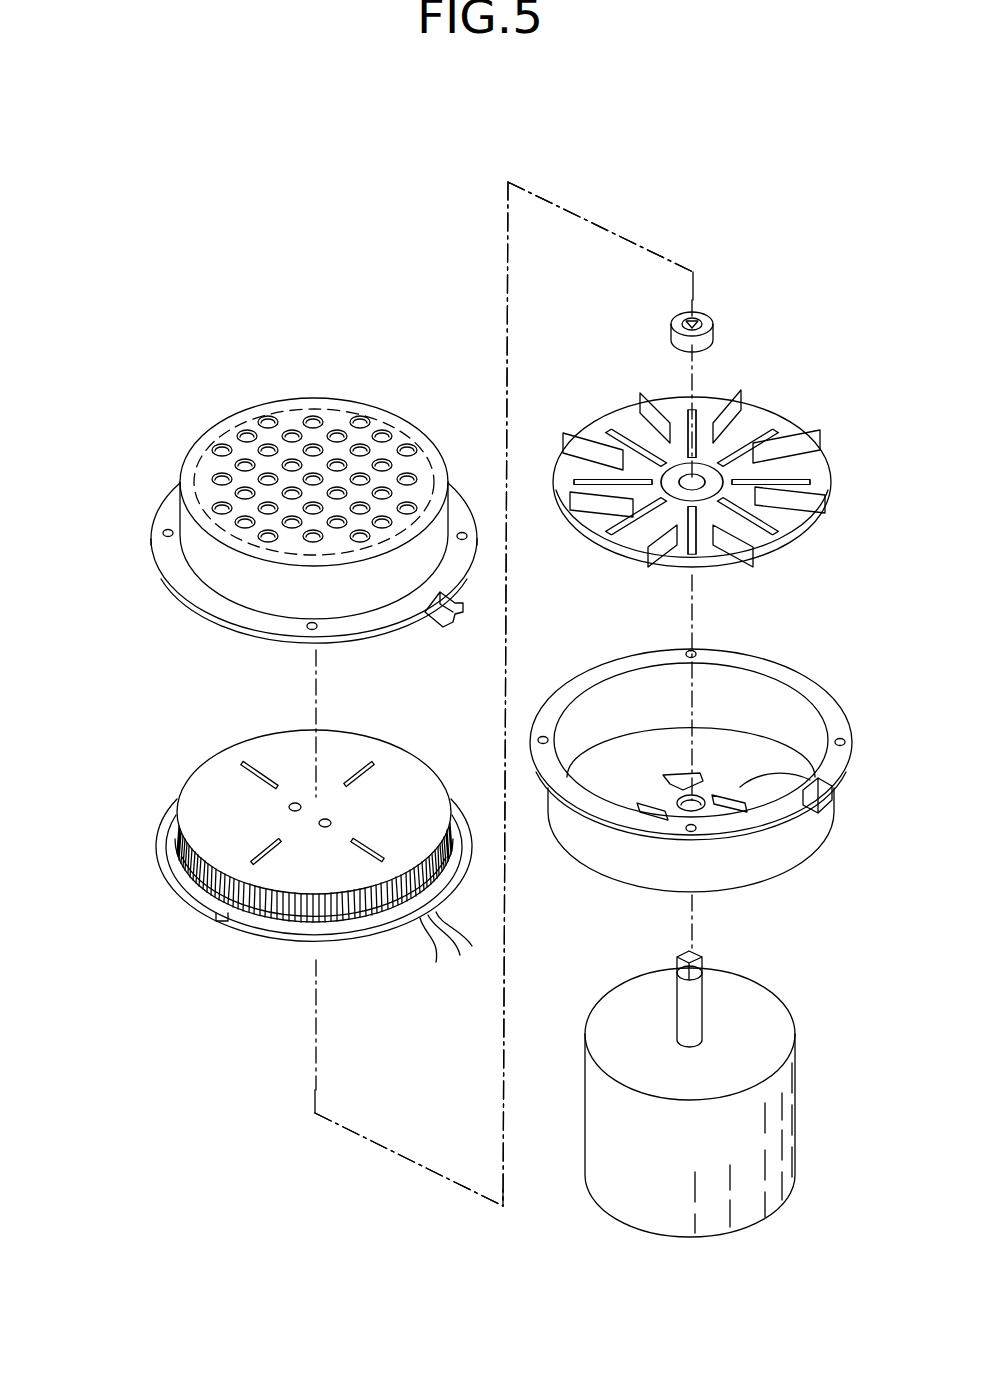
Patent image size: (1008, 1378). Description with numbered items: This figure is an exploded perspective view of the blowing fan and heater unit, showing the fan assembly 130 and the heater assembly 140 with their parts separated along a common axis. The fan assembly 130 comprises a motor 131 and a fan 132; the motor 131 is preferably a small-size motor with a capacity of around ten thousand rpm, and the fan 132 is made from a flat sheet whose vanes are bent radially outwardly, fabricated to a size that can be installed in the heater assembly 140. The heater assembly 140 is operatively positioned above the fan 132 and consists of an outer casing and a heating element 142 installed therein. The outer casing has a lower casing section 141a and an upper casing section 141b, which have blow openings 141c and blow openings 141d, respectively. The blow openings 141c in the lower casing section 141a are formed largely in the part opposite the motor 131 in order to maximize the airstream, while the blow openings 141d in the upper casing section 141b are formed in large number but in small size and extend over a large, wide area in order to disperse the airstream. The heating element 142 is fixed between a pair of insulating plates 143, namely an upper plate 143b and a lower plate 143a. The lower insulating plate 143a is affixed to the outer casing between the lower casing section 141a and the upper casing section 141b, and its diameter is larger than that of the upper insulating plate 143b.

The fan assembly 130 is at (701, 125).
The heater assembly 140 is at (776, 125).
The motor 131 is at (788, 1100).
The fan 132 is at (772, 420).
The lower casing section 141a is at (716, 737).
The upper casing section 141b is at (314, 480).
The blow openings 141c is at (822, 797).
The blow openings 141d is at (362, 420).
The heating element 142 is at (203, 887).
The insulating plates 143 is at (243, 787).
The lower insulating plate 143a is at (167, 847).
The upper insulating plate 143b is at (188, 820).